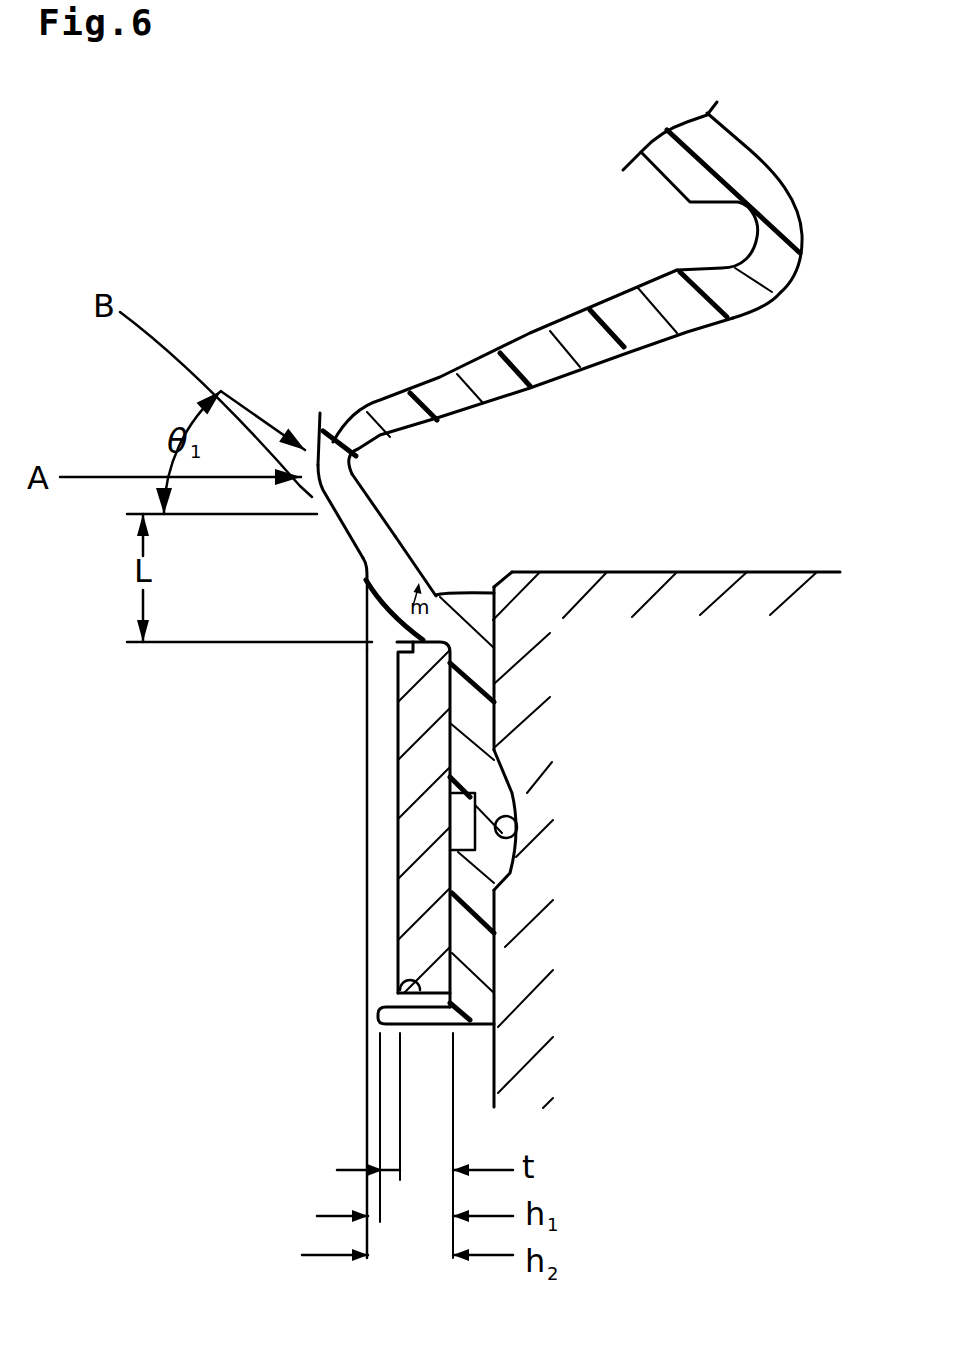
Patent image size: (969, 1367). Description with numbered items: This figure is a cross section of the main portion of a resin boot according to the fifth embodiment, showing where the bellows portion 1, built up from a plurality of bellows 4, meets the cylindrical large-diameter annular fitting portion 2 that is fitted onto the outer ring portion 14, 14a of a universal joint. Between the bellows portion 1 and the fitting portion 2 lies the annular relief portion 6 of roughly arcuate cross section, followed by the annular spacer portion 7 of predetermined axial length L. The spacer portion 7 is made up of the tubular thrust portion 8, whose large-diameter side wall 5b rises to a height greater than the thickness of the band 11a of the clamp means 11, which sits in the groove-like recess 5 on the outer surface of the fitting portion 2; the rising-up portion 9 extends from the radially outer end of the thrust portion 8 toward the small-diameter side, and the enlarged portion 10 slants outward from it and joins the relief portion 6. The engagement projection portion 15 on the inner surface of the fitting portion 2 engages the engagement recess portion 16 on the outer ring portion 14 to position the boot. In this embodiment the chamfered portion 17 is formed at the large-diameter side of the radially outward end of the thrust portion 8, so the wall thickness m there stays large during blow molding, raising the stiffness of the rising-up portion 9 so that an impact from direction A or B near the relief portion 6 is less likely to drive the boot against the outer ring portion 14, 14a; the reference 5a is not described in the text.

The bellows portion 1 is at (531, 351).
The annular fitting portion of large diameter 2 is at (472, 952).
The bellows 4 is at (441, 389).
The groove-like recess 5 is at (437, 742).
The foot portion of seal ring 5a is at (407, 972).
The side wall of the large-diameter side 5b is at (403, 655).
The annular relief portion 6 is at (320, 413).
The annular spacer portion 7 is at (355, 581).
The thrust portion 8 is at (433, 610).
The rising-up portion 9 is at (387, 572).
The enlarged portion 10 is at (343, 523).
The clamp means 11 is at (422, 888).
The band 11a is at (417, 833).
The outer ring portion 14 is at (765, 592).
The outer ring portion 14a is at (495, 590).
The engagement projection portion 15 is at (500, 797).
The engagement recess portion 16 is at (516, 838).
The chamfered portion 17 is at (378, 622).